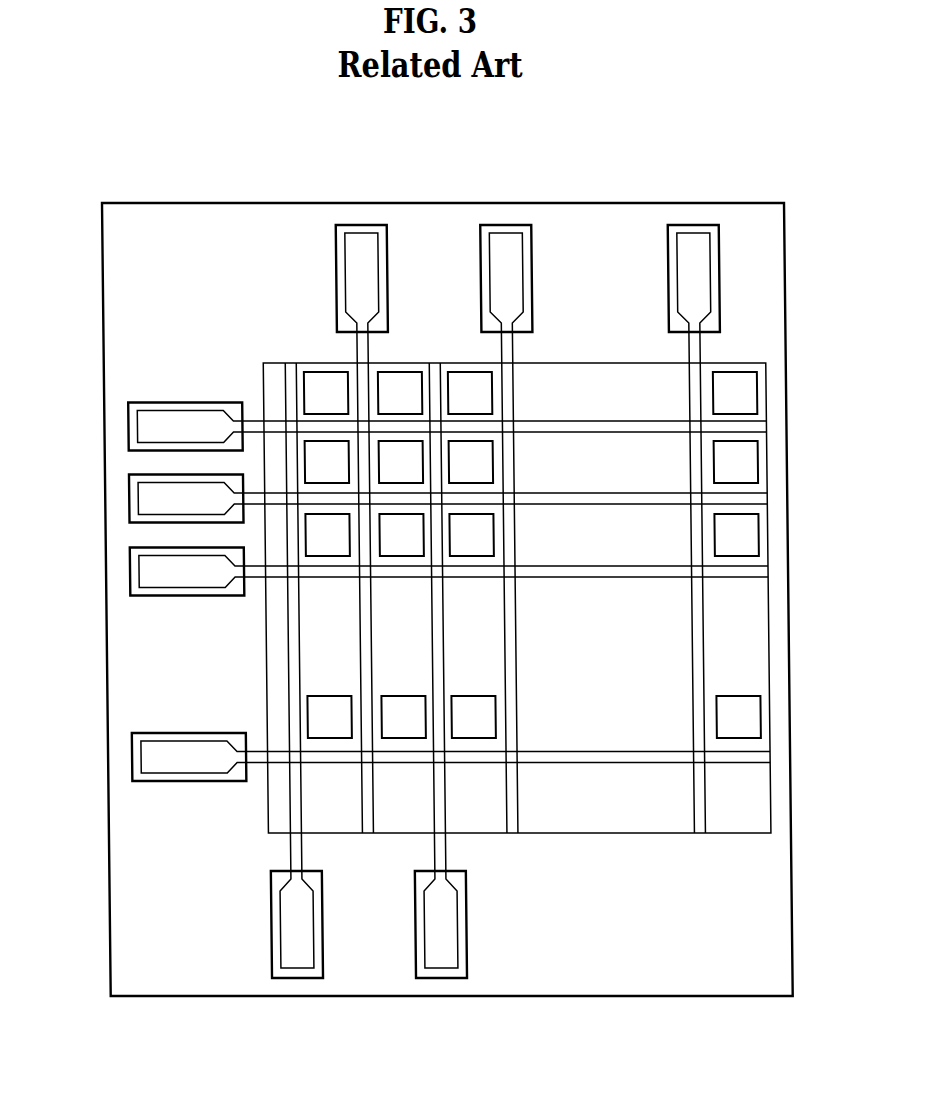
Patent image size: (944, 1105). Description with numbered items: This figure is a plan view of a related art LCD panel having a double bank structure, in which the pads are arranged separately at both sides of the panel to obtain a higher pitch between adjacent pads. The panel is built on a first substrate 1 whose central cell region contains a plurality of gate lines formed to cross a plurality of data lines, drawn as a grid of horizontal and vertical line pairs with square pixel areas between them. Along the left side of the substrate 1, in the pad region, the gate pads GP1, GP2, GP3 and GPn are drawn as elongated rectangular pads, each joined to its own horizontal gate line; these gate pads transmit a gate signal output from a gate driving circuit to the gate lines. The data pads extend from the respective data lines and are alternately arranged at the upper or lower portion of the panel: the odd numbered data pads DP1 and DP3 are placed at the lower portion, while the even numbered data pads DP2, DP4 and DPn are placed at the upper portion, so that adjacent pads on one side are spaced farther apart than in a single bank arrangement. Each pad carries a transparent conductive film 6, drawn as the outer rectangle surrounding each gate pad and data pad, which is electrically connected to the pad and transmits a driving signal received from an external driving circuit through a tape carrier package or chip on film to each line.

The first substrate 1 is at (793, 927).
The transparent conductive film 6 is at (718, 282).
The gate pad GP1 is at (138, 425).
The gate pad GP2 is at (139, 500).
The gate pad GP3 is at (139, 575).
The gate pad GPn is at (141, 758).
The data pad DP1 is at (297, 978).
The data pad DP2 is at (359, 233).
The data pad DP3 is at (444, 978).
The data pad DP4 is at (503, 233).
The data pad DPn is at (694, 233).